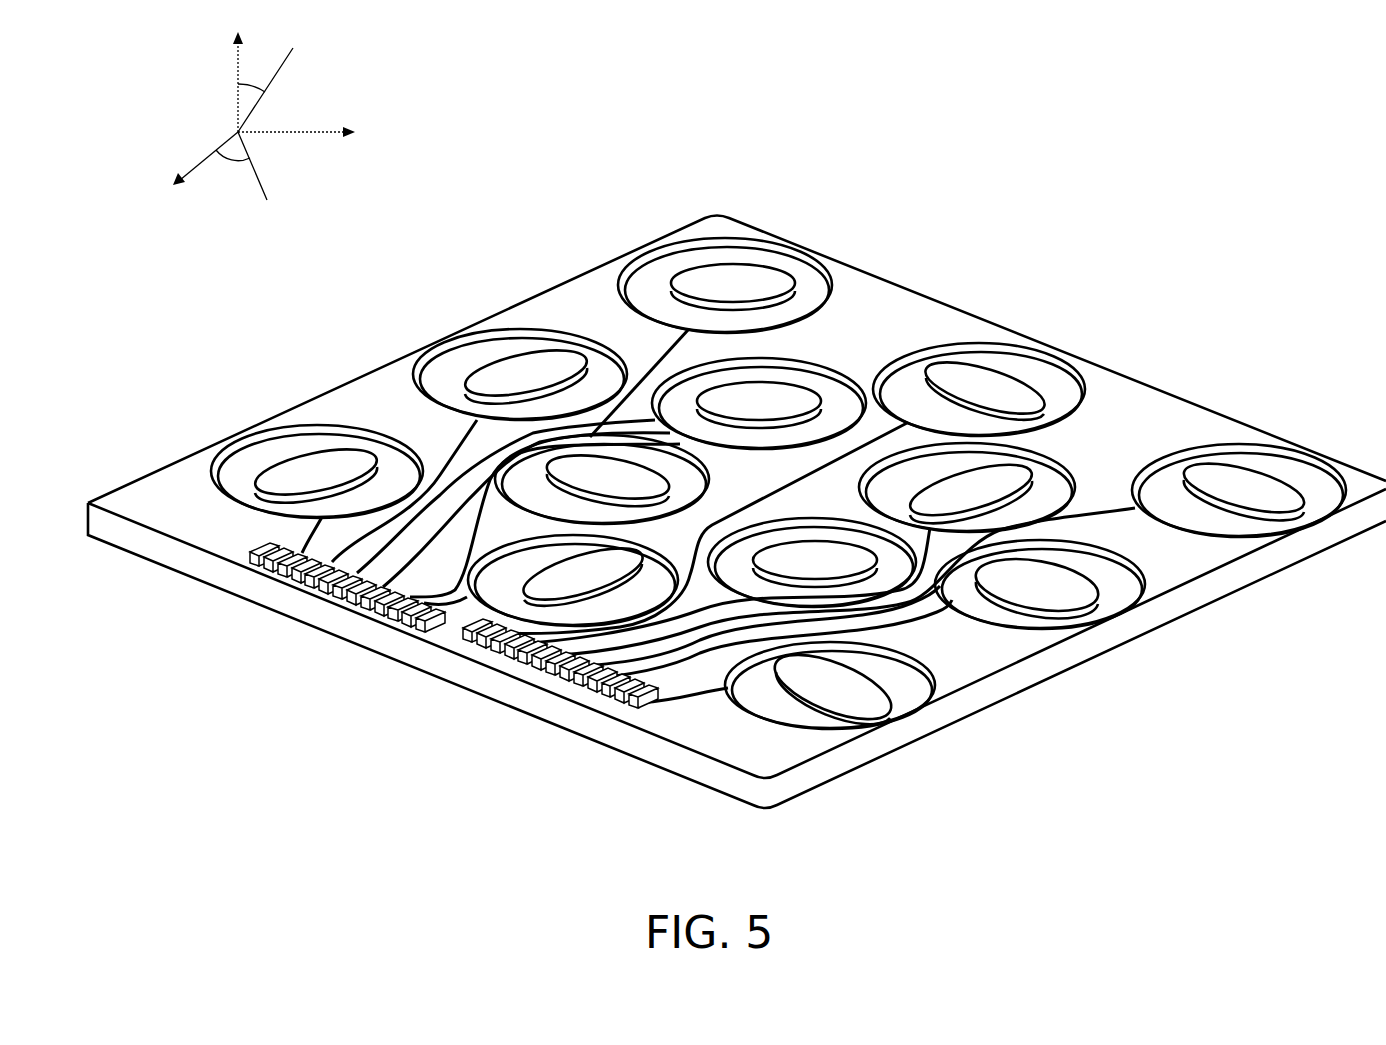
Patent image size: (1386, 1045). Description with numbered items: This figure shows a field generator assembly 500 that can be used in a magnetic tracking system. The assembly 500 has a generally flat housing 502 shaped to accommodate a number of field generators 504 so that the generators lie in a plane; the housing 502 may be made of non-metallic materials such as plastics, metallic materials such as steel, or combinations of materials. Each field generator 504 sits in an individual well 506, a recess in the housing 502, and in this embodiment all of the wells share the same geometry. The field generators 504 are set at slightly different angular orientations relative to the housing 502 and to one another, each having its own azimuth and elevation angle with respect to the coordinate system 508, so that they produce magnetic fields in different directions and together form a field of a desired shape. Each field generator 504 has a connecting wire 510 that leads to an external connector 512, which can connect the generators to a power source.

The field generator assembly 500 is at (683, 193).
The housing 502 is at (884, 310).
The field generators 504 is at (1033, 480).
The well 506 is at (800, 280).
The coordinate system 508 is at (279, 121).
The connecting wire 510 is at (937, 610).
The external connector 512 is at (483, 678).